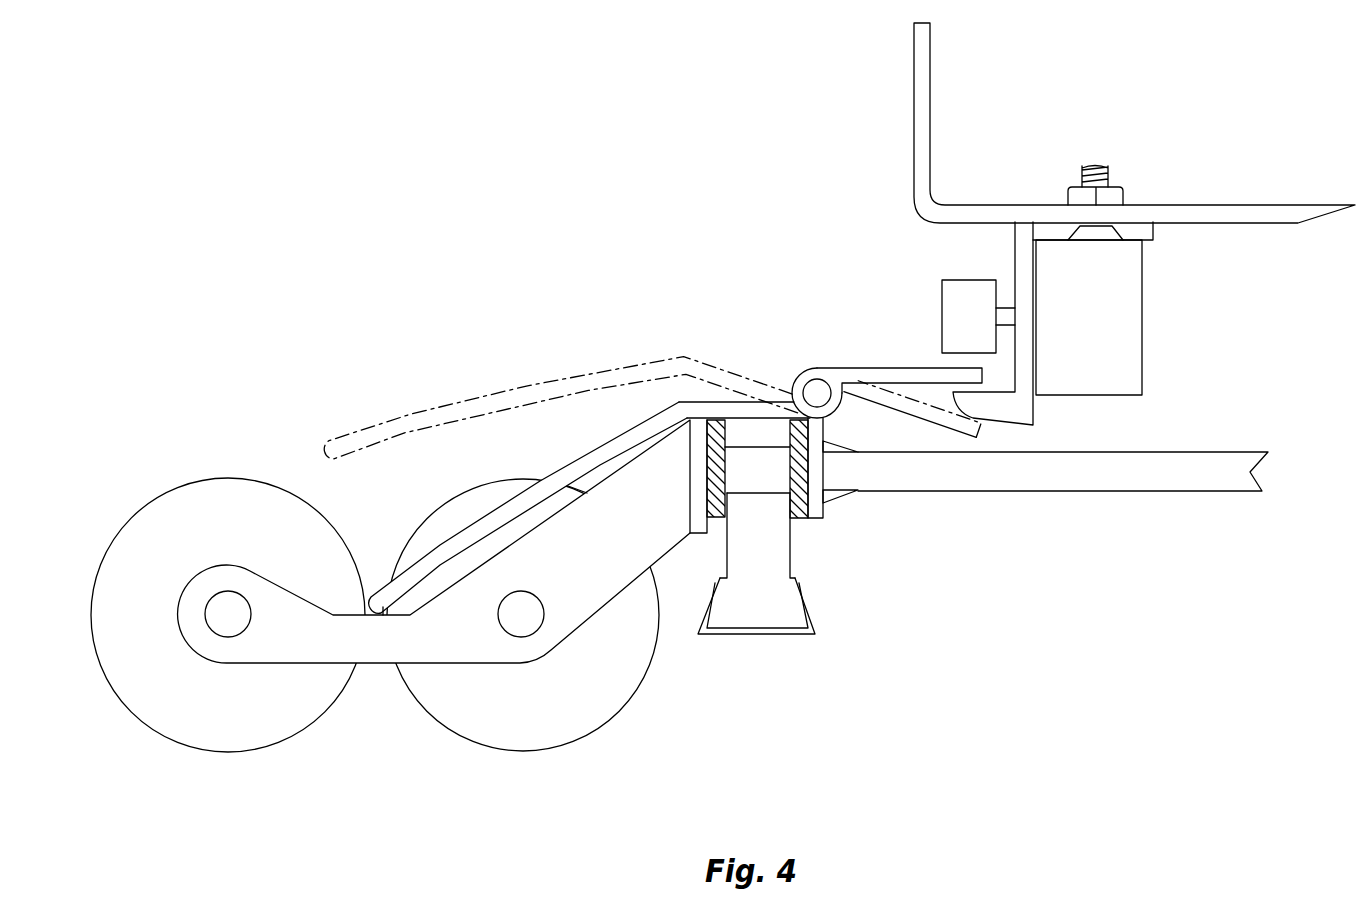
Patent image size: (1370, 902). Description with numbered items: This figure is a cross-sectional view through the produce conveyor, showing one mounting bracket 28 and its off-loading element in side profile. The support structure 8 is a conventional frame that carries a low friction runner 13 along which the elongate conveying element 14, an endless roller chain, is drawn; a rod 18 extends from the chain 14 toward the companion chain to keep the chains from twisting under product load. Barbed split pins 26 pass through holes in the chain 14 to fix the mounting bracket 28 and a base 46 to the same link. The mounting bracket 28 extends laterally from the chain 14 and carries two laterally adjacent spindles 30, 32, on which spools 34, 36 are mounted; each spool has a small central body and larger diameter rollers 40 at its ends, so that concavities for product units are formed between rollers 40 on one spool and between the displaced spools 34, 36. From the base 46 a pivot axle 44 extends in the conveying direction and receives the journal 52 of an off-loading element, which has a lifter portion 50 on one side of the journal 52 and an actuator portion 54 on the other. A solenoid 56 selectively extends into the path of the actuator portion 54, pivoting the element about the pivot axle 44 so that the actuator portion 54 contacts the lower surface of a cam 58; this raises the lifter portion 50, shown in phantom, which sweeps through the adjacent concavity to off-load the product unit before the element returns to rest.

The support structure 8 is at (813, 637).
The low friction runner 13 is at (752, 612).
The elongate conveying element 14 is at (797, 522).
The rod 18 is at (1068, 492).
The barbed split pin 26 is at (842, 493).
The mounting bracket 28 is at (667, 557).
The spindle 30 is at (513, 628).
The spindle 32 is at (222, 627).
The spool 34 is at (568, 723).
The spool 36 is at (208, 478).
The roller 40 is at (544, 646).
The pivot axle 44 is at (816, 368).
The base 46 is at (818, 518).
The lifter portion 50 is at (598, 447).
The journal 52 is at (800, 383).
The actuator portion 54 is at (872, 368).
The solenoid 56 is at (942, 297).
The cam 58 is at (1038, 408).